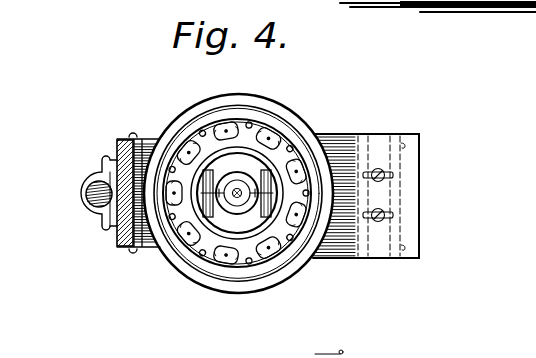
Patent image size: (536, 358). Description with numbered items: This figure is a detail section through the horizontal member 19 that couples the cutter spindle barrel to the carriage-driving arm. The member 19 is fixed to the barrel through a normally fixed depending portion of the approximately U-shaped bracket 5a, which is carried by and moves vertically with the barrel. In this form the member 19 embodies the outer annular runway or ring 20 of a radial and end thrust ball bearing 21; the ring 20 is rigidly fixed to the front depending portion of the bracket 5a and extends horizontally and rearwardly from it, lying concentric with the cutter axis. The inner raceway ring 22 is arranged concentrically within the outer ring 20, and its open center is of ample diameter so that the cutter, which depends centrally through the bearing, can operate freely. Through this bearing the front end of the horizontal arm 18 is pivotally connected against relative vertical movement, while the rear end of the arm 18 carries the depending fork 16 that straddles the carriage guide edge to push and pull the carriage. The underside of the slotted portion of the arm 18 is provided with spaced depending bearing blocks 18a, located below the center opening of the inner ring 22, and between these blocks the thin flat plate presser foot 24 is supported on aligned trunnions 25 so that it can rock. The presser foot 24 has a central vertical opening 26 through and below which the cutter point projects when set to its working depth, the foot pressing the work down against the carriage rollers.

The bracket 5a is at (87, 195).
The depending fork 16 is at (365, 150).
The horizontal arm 18 is at (351, 254).
The depending bearing blocks 18a is at (288, 165).
The horizontal member 19 is at (142, 205).
The outer annular runway or ring 20 is at (200, 268).
The radial and end thrust ball bearing 21 is at (251, 200).
The inner raceway annulus or ring 22 is at (261, 172).
The presser foot 24 is at (268, 218).
The trunnions 25 is at (283, 152).
The central vertical opening 26 is at (237, 200).